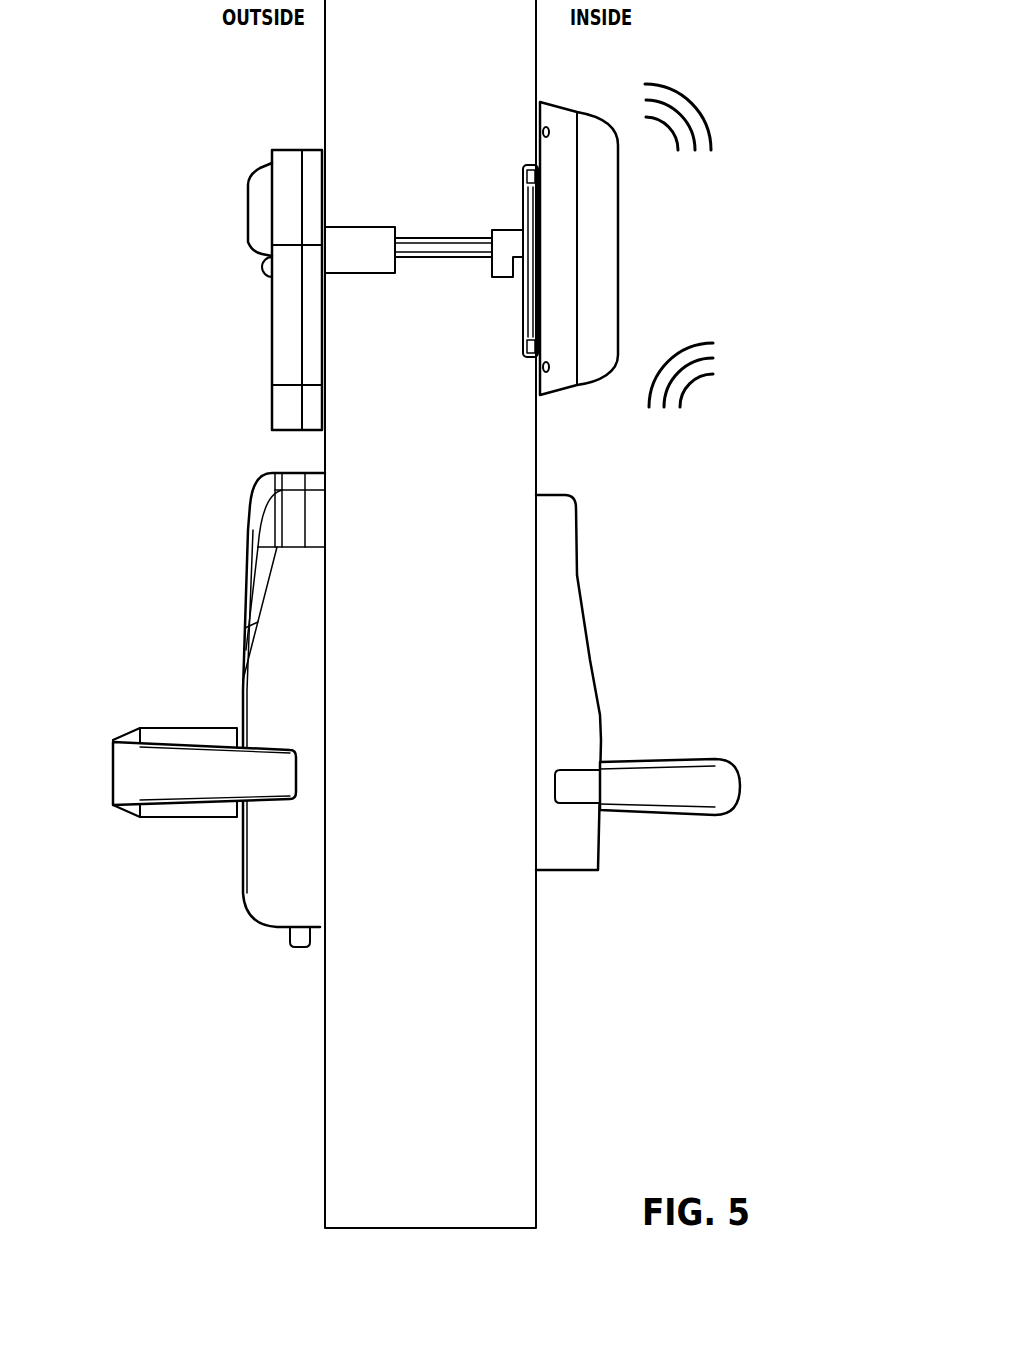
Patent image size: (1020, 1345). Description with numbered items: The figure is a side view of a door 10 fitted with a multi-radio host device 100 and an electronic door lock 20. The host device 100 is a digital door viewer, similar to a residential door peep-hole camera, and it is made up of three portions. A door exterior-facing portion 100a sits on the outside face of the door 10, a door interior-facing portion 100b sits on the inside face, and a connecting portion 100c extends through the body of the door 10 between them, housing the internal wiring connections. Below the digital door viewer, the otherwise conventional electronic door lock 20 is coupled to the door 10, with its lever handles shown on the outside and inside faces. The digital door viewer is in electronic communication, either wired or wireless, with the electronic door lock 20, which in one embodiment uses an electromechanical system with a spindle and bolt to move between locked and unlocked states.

The door 10 is at (438, 1085).
The electronic door lock 20 is at (390, 710).
The host device 100 is at (423, 257).
The door exterior-facing portion 100a is at (292, 283).
The door interior-facing portion 100b is at (602, 278).
The connecting portion 100c is at (382, 260).